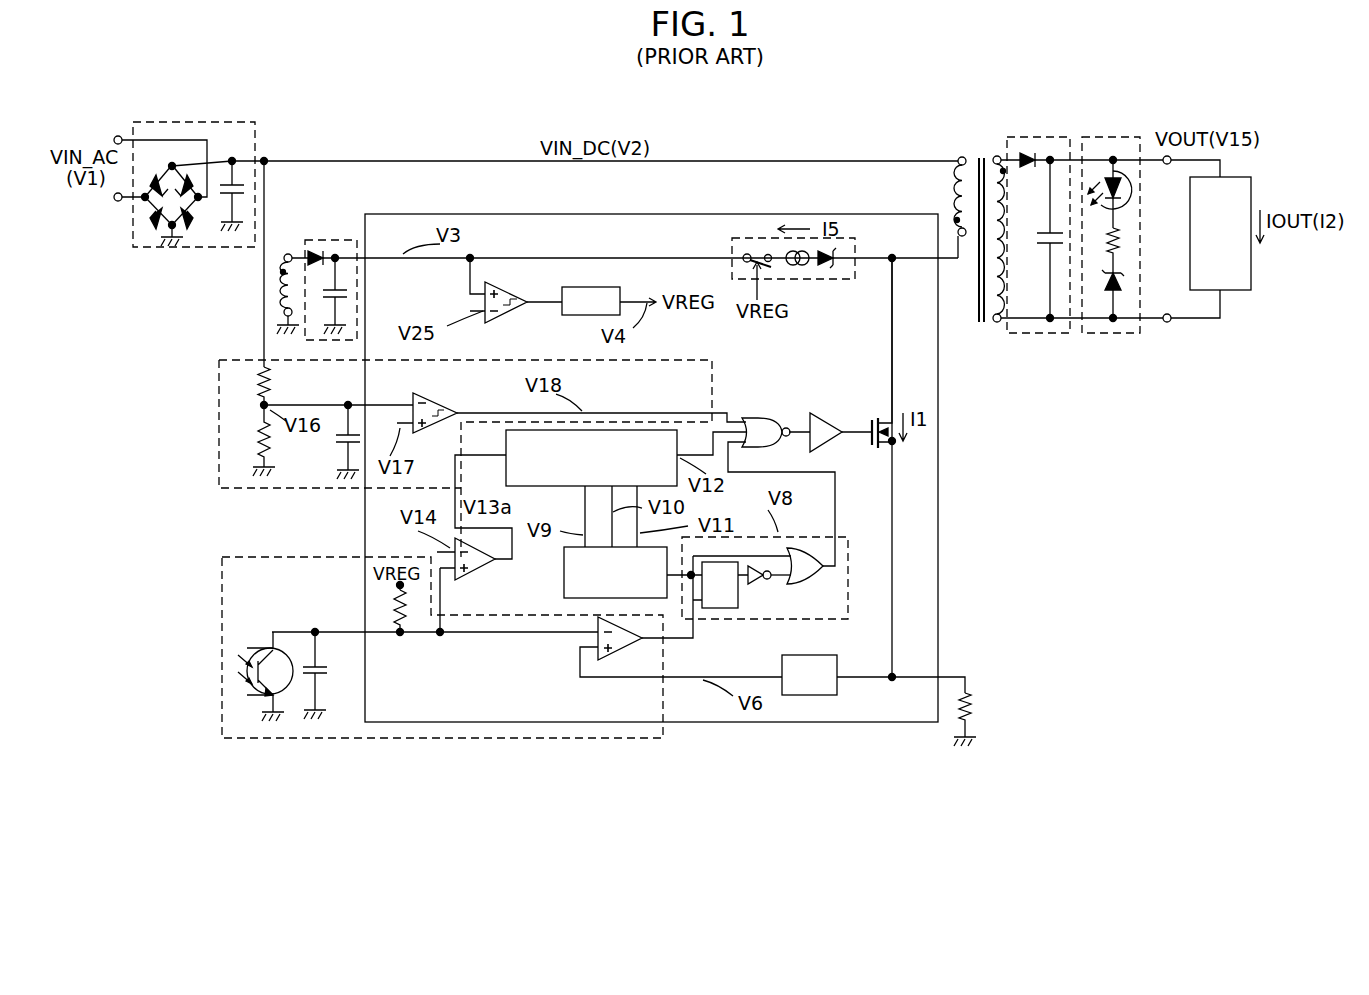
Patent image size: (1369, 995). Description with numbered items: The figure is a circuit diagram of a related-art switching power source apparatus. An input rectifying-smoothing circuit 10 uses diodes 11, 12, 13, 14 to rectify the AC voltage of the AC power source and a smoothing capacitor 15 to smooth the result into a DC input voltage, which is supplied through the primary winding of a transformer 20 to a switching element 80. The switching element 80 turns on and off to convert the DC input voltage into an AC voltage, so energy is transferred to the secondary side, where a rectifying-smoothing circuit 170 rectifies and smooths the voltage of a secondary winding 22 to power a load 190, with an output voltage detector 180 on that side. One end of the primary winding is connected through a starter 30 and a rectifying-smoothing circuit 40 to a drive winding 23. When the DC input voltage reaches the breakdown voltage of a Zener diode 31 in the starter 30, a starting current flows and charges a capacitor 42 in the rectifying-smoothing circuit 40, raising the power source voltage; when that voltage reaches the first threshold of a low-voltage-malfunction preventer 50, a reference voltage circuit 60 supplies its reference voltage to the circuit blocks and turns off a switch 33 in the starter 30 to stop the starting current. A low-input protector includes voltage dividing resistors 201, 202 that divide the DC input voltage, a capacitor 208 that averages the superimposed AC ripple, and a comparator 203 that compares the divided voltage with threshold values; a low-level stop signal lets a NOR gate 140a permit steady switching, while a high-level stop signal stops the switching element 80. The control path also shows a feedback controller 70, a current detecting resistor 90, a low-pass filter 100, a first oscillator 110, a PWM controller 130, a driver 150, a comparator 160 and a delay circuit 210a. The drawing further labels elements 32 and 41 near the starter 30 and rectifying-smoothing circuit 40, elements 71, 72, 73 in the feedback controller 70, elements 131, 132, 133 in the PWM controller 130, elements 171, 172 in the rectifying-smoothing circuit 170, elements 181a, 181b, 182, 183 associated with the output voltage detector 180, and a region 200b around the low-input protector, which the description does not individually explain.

The input rectifying-smoothing circuit 10 is at (255, 136).
The diode 11 is at (157, 150).
The diode 12 is at (187, 150).
The diode 13 is at (157, 228).
The diode 14 is at (192, 228).
The smoothing capacitor 15 is at (241, 189).
The transformer 20 is at (985, 156).
The secondary winding 22 is at (997, 156).
The drive winding 23 is at (285, 252).
The starter 30 is at (855, 241).
The Zener diode 31 is at (831, 268).
The current source 32 is at (798, 267).
The switch 33 is at (742, 262).
The rectifying-smoothing circuit 40 is at (348, 238).
The diode 41 is at (313, 250).
The capacitor 42 is at (347, 292).
The low-voltage-malfunction preventer 50 is at (508, 300).
The reference voltage circuit 60 is at (590, 283).
The feedback controller 70 is at (250, 551).
The capacitor 71 is at (335, 670).
The resistor 72 is at (417, 612).
The comparator 73 is at (620, 658).
The switching element 80 is at (873, 420).
The current detecting resistor 90 is at (983, 700).
The low-pass filter 100 is at (818, 695).
The first oscillator 110 is at (562, 588).
The PWM controller 130 is at (850, 537).
The SR flip-flop 131 is at (720, 610).
The inverter 132 is at (758, 583).
The OR gate 133 is at (802, 583).
The NOR gate 140a is at (745, 416).
The driver 150 is at (827, 413).
The comparator 160 is at (470, 575).
The rectifying-smoothing circuit 170 is at (1047, 334).
The diode 171 is at (1032, 152).
The output capacitor 172 is at (1040, 245).
The output voltage detector 180 is at (1107, 334).
The light emitting diode of photocoupler 181a is at (1118, 155).
The phototransistor of photocoupler 181b is at (257, 642).
The resistor 182 is at (1125, 246).
The zener diode 183 is at (1125, 288).
The load 190 is at (1251, 268).
The voltage detection circuit 200b is at (219, 416).
The voltage dividing resistor 201 is at (272, 378).
The voltage dividing resistor 202 is at (272, 445).
The comparator 203 is at (410, 405).
The capacitor 208 is at (343, 462).
The delay circuit 210a is at (642, 428).